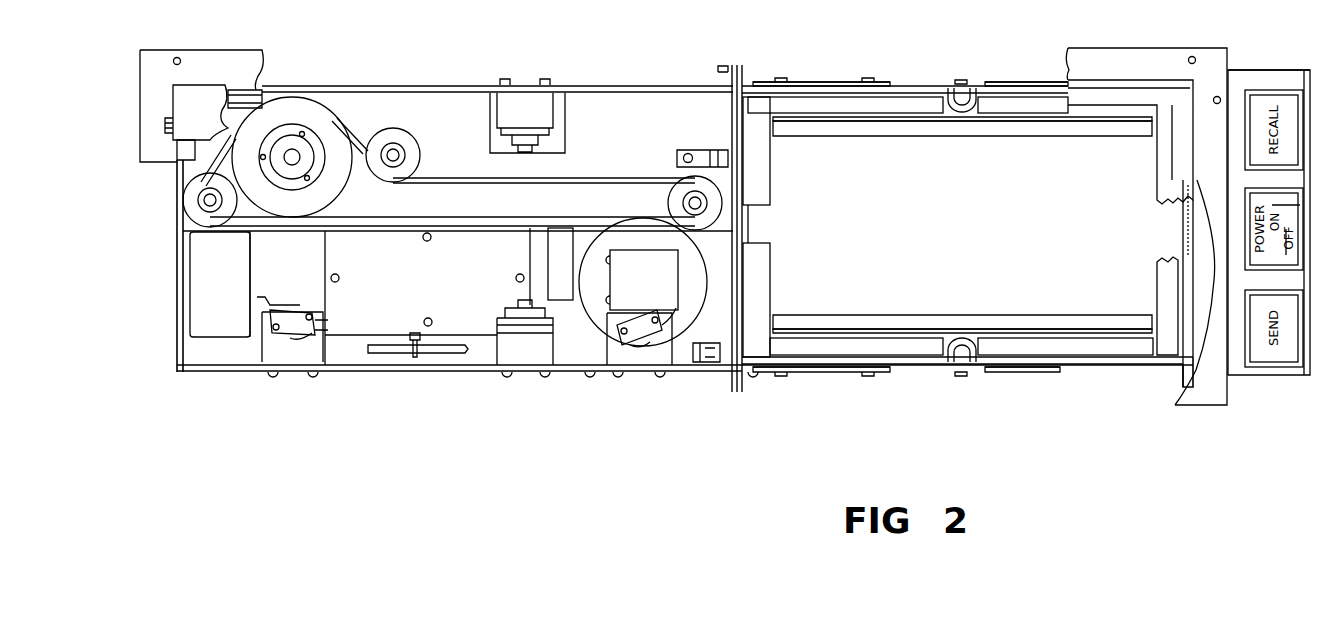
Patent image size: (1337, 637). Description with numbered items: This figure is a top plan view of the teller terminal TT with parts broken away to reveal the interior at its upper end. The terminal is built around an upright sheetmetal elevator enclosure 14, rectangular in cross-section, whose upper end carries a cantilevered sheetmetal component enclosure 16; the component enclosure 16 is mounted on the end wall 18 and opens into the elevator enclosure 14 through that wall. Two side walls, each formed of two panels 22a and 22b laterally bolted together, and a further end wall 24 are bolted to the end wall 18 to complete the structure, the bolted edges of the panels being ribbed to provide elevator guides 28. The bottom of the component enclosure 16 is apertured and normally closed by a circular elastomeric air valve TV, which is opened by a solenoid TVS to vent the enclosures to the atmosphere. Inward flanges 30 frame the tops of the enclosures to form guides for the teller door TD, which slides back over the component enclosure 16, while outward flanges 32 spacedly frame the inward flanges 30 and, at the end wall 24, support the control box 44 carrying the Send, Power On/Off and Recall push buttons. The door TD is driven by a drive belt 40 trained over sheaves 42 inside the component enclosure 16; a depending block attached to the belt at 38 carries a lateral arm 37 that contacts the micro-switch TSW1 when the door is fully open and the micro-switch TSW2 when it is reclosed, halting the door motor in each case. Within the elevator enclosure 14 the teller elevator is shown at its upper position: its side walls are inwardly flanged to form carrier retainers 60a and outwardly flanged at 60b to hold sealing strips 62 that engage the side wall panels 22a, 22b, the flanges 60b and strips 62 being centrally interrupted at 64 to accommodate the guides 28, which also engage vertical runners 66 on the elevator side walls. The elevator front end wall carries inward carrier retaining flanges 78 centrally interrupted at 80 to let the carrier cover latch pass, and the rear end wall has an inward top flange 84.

The outward flanges 32 is at (222, 57).
The inward flanges 30 is at (258, 88).
The teller terminal door TD is at (185, 107).
The sheaves 42 is at (192, 208).
The drive belts 40 is at (490, 175).
The block lower end attachment 38 is at (526, 224).
The lateral arm 37 is at (557, 300).
The micro-switch TSW1 is at (305, 318).
The micro-switch TSW2 is at (645, 330).
The teller terminal TT is at (518, 398).
The air valve TV is at (698, 298).
The solenoid TVS is at (664, 283).
The component enclosures 16 is at (626, 159).
The end walls 18 is at (730, 119).
The elevator enclosures 14 is at (805, 83).
The sealing strips 62 is at (835, 100).
The side wall panel 22a is at (905, 85).
The side wall panel 22b is at (1005, 85).
The vertical runners 66 is at (970, 95).
The central interruption 64 is at (955, 107).
The elevator guides 28 is at (968, 108).
The carrier retainers 60a is at (825, 136).
The outward flanges 60b is at (880, 120).
The carrier retaining flanges 78 is at (770, 163).
The central interruption 80 is at (750, 228).
The inward top flanges 84 is at (1165, 270).
The end walls 24 is at (1185, 293).
The control box 44 is at (1290, 72).